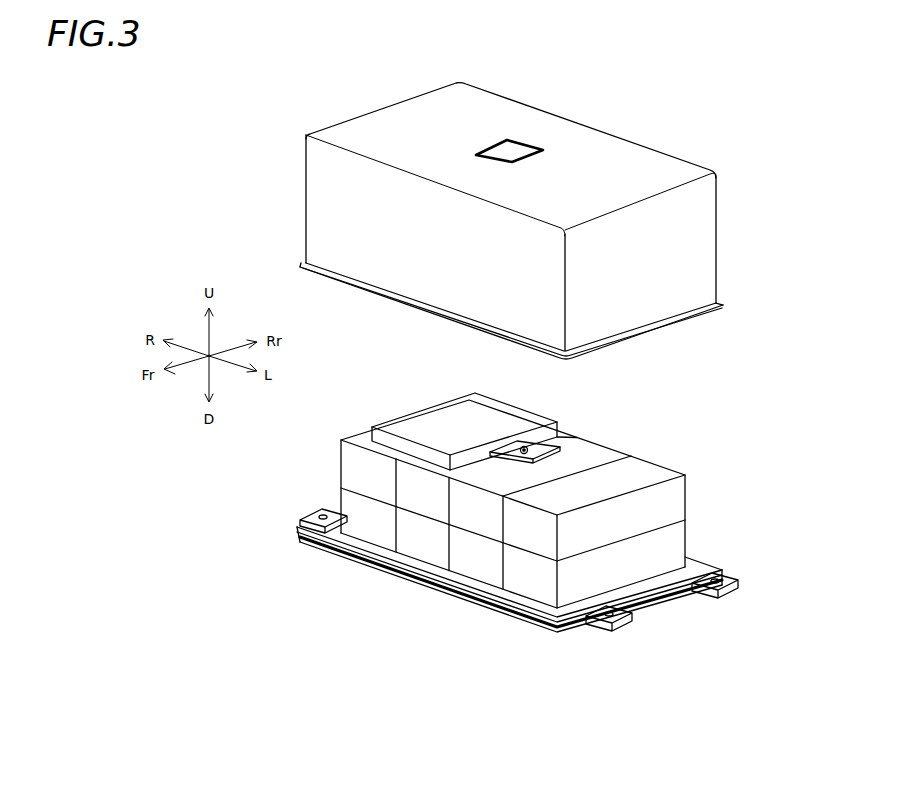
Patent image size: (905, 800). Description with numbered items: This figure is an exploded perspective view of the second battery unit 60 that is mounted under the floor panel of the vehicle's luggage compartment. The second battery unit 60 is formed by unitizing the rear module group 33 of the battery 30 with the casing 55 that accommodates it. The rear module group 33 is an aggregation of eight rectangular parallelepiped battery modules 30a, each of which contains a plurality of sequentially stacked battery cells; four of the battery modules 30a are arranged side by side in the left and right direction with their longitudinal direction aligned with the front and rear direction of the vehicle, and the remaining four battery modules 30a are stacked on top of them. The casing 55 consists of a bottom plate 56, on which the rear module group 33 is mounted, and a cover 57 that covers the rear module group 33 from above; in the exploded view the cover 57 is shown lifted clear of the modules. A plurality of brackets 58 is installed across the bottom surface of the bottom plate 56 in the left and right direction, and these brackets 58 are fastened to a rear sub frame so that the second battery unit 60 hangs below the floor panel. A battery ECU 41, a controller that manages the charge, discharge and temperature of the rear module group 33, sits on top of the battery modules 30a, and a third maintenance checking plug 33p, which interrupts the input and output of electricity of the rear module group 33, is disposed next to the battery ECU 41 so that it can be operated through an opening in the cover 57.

The second battery unit 60 is at (632, 111).
The cover 57 is at (657, 293).
The casing 55 is at (765, 345).
The bottom plate 56 is at (698, 566).
The brackets 58 is at (322, 510).
The rear module group 33 is at (637, 457).
The battery 30 is at (515, 519).
The battery modules 30a is at (370, 472).
The battery ECU 41 is at (438, 417).
The third maintenance checking plug 33p is at (526, 447).